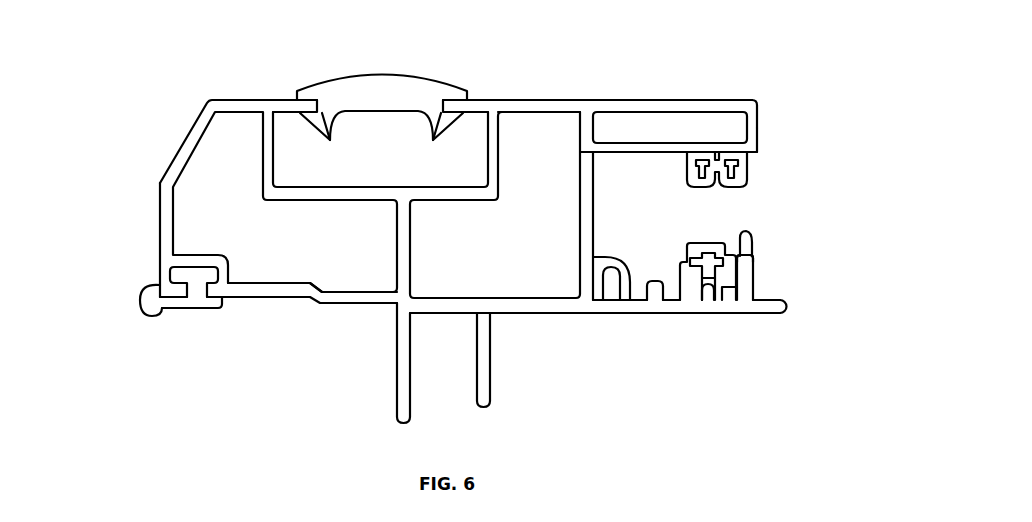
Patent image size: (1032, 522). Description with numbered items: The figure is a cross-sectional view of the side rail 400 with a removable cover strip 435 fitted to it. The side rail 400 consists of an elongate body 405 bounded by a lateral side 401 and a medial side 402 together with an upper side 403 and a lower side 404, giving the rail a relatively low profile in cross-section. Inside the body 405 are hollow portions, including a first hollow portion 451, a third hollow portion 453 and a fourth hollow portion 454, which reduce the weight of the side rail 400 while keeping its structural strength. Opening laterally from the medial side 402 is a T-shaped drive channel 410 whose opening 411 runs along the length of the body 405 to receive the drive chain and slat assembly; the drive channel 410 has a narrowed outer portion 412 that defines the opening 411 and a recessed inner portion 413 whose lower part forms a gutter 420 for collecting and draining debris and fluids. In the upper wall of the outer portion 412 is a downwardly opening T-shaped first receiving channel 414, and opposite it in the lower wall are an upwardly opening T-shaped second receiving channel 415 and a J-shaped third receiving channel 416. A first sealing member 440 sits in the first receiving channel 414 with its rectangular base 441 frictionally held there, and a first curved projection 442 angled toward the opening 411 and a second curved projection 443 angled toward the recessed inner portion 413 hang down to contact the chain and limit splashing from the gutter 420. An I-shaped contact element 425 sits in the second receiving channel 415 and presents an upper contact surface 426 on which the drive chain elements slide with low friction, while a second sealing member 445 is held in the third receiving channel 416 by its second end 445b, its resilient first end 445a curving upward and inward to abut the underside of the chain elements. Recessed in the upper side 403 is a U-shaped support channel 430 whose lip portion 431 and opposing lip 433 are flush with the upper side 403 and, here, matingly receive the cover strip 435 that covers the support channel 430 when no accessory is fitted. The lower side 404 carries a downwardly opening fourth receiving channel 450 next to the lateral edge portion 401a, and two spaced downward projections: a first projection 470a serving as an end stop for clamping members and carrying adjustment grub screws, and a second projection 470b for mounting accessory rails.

The side rail 400 is at (118, 102).
The lateral side 401 is at (160, 191).
The lateral edge portion 401a is at (153, 286).
The medial side 402 is at (762, 121).
The upper side 403 is at (609, 99).
The lower side 404 is at (528, 313).
The elongate body 405 is at (512, 123).
The drive channel 410 is at (538, 108).
The opening 411 is at (768, 198).
The outer portion 412 is at (760, 153).
The recessed inner portion 413 is at (668, 302).
The first receiving channel 414 is at (757, 118).
The second receiving channel 415 is at (718, 302).
The third receiving channel 416 is at (767, 314).
The gutter 420 is at (643, 303).
The contact element 425 is at (698, 302).
The upper contact surface 426 is at (752, 218).
The support channel 430 is at (263, 140).
The lip portion 431 is at (284, 99).
The right hook lip 433 is at (477, 98).
The cover strip 435 is at (340, 92).
The first sealing member 440 is at (709, 150).
The base 441 is at (728, 150).
The first curved projection 442 is at (688, 142).
The second curved projection 443 is at (748, 184).
The second sealing member 445 is at (755, 271).
The first end 445a is at (755, 231).
The second end 445b is at (758, 301).
The fourth receiving channel 450 is at (196, 266).
The first hollow portion 451 is at (262, 272).
The third hollow portion 453 is at (600, 302).
The fourth hollow portion 454 is at (651, 112).
The first projection 470a is at (397, 352).
The second projection 470b is at (479, 355).